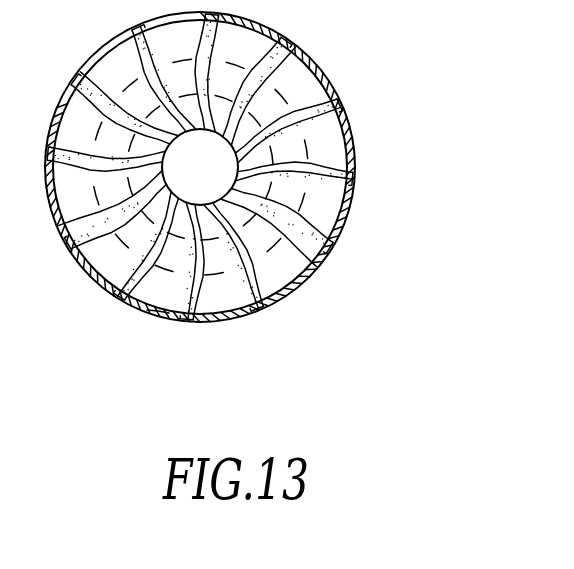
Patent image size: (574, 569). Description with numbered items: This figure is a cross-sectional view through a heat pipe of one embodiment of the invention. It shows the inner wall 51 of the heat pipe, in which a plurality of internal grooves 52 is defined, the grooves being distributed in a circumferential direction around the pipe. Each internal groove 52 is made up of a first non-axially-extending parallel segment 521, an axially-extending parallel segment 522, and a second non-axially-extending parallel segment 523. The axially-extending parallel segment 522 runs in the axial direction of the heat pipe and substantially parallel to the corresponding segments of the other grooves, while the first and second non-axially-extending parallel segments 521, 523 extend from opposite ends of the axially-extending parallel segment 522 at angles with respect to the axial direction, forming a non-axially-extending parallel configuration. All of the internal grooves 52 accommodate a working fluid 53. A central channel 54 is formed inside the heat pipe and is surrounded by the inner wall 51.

The inner wall 51 is at (318, 63).
The working fluid 53 is at (343, 108).
The internal groove 52 is at (275, 167).
The first non-axially-extending parallel segment 521 is at (330, 163).
The axially-extending parallel segment 522 is at (330, 200).
The second non-axially-extending parallel segment 523 is at (455, 165).
The central channel 54 is at (162, 305).